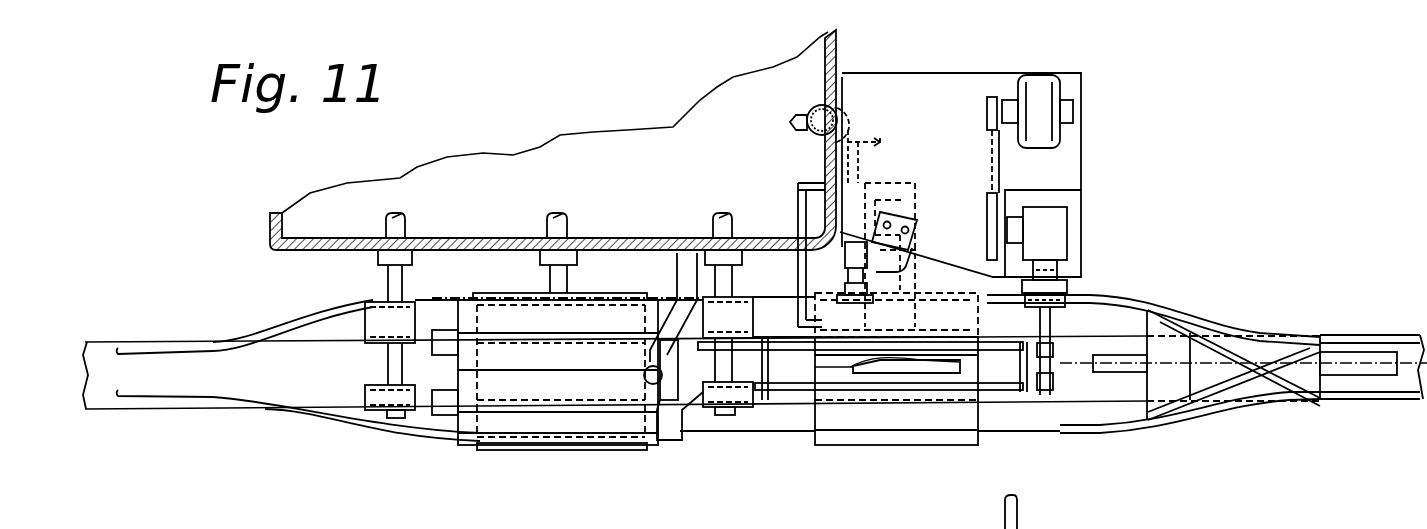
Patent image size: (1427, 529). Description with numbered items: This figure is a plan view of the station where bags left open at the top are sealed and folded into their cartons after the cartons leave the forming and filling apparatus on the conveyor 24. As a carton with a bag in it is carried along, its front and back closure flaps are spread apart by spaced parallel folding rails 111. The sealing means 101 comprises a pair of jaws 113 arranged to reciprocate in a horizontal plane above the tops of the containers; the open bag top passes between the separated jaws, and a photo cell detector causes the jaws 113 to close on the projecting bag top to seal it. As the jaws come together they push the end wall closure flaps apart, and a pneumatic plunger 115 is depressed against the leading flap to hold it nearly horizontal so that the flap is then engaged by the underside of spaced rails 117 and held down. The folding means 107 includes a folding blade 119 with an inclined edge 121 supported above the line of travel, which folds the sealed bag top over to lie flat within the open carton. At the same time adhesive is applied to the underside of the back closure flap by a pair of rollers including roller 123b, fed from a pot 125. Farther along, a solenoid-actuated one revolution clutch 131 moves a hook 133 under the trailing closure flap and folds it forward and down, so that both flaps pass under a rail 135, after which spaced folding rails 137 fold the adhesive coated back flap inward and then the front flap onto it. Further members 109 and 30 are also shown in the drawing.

The conveyor 24 is at (138, 420).
The frame member 30 is at (626, 517).
The sealing means 101 is at (527, 290).
The folding means 107 is at (945, 405).
The flared sleeve 109 is at (1093, 333).
The folding rails 111 is at (293, 320).
The jaws 113 is at (598, 315).
The pneumatic plunger 115 is at (645, 374).
The rails 117 is at (807, 390).
The folding blade 119 is at (930, 370).
The inclined edge 121 is at (892, 365).
The roller 123b is at (877, 297).
The pot 125 is at (910, 183).
The one revolution clutch 131 is at (1062, 285).
The hook 133 is at (997, 382).
The rail 135 is at (1112, 370).
The folding rails 137 is at (1358, 342).